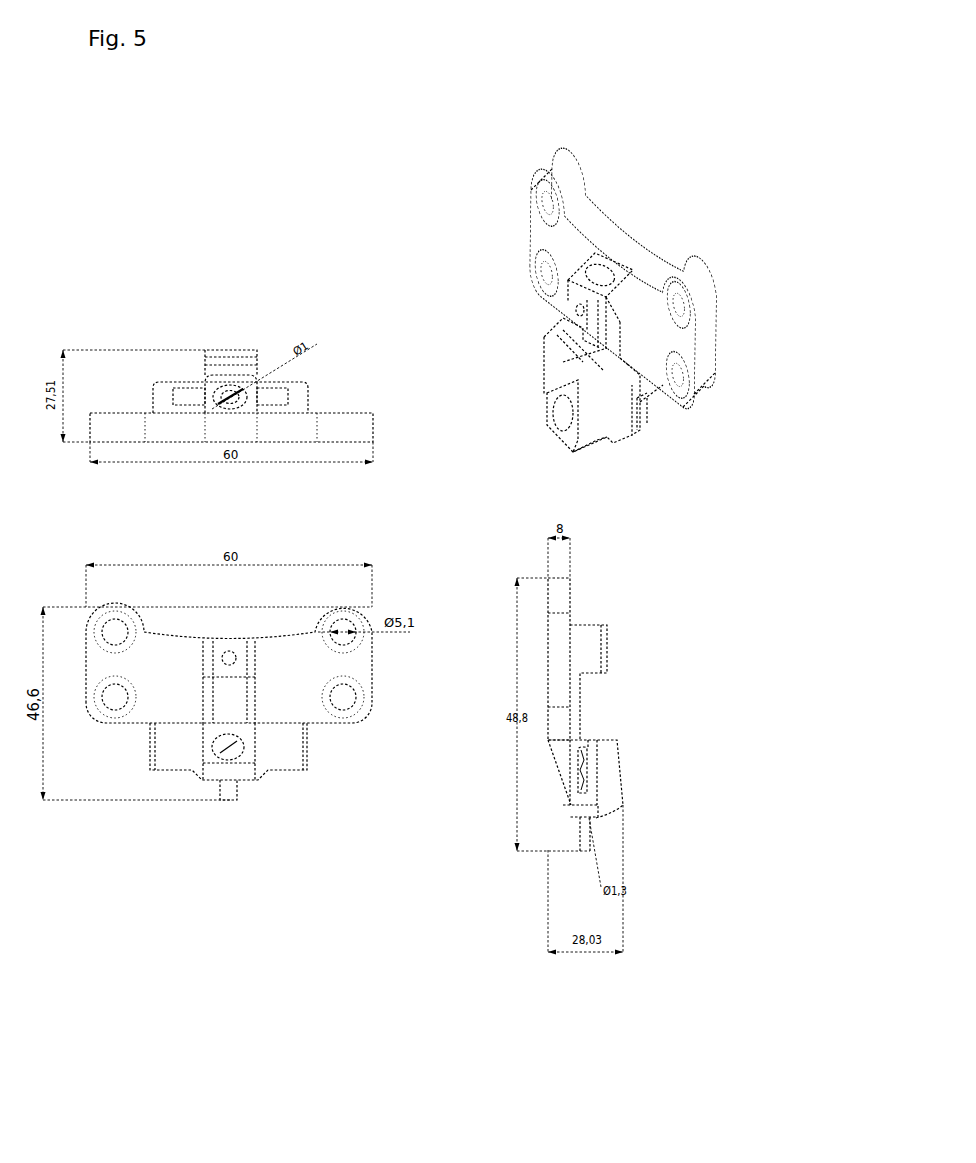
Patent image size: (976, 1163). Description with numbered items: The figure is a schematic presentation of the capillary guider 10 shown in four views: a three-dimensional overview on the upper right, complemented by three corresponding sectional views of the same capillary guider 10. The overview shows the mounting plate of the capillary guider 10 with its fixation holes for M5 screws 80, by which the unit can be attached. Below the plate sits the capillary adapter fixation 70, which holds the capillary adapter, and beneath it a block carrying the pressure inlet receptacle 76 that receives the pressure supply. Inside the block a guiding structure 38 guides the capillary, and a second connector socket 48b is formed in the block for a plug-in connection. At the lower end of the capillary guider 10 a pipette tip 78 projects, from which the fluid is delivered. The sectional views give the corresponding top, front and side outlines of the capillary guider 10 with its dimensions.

The capillary guider 10 is at (523, 235).
The fixation holes for M5 screws 80 is at (548, 203).
The capillary adapter fixation 70 is at (566, 293).
The pressure inlet receptacle 76 is at (547, 408).
The pipette tip 78 is at (597, 453).
The guiding structure 38 is at (605, 373).
The second connector socket 48b is at (652, 420).